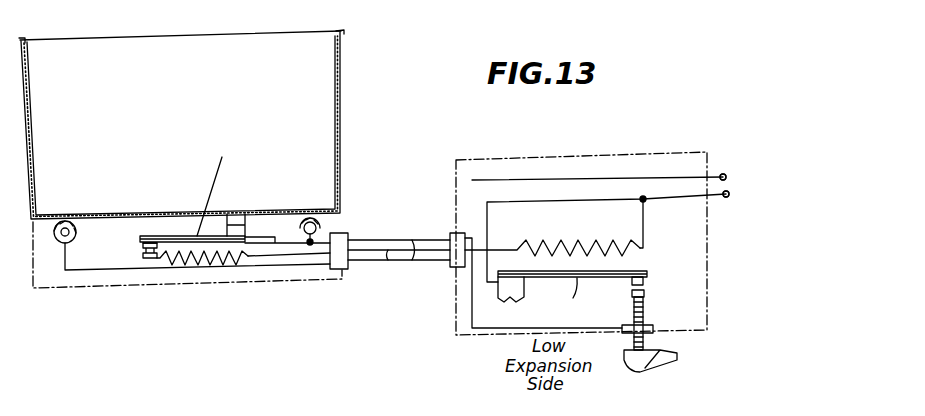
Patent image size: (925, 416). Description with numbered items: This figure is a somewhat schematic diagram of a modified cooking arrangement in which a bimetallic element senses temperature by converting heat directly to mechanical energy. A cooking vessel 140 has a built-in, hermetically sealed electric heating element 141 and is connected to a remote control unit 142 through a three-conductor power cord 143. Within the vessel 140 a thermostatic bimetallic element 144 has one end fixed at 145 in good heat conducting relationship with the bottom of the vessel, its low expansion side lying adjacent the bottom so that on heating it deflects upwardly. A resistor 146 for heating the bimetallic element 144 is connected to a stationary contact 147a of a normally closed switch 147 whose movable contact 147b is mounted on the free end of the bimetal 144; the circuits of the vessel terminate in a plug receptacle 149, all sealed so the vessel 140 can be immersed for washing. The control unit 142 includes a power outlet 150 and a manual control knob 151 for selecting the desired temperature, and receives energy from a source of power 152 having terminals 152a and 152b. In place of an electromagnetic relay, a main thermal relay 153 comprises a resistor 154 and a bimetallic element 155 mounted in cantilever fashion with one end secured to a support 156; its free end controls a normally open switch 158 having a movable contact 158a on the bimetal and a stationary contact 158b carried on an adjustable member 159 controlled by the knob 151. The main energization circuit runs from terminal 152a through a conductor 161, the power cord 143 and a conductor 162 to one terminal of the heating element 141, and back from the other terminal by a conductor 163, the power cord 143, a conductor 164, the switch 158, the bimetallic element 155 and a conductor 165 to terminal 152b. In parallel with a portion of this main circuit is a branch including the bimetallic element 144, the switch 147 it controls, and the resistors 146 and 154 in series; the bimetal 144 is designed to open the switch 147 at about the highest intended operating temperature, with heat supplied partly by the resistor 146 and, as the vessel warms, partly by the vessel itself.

The cooking vessel 140 is at (338, 100).
The electric heating element 141 is at (63, 220).
The remote control unit 142 is at (562, 158).
The three-conductor power cord 143 is at (384, 254).
The bimetallic element 144 is at (172, 236).
The fixed end 145 is at (233, 228).
The resistor 146 is at (200, 276).
The normally closed switch 147 is at (130, 256).
The stationary contact 147a is at (137, 258).
The movable contact 147b is at (143, 245).
The plug receptacle 149 is at (340, 238).
The power outlet 150 is at (455, 233).
The manual control knob 151 is at (641, 364).
The source of power 152 is at (730, 192).
The terminal 152a is at (723, 174).
The terminal 152b is at (727, 197).
The main thermal relay 153 is at (626, 265).
The resistor 154 is at (592, 242).
The bimetallic element 155 is at (596, 278).
The support 156 is at (522, 299).
The normally open switch 158 is at (645, 283).
The movable contact 158a is at (645, 276).
The stationary contact 158b is at (645, 298).
The adjustable member 159 is at (645, 313).
The conductor 161 is at (526, 180).
The conductor 162 is at (320, 236).
The conductor 163 is at (240, 270).
The conductor 164 is at (512, 330).
The conductor 165 is at (540, 204).